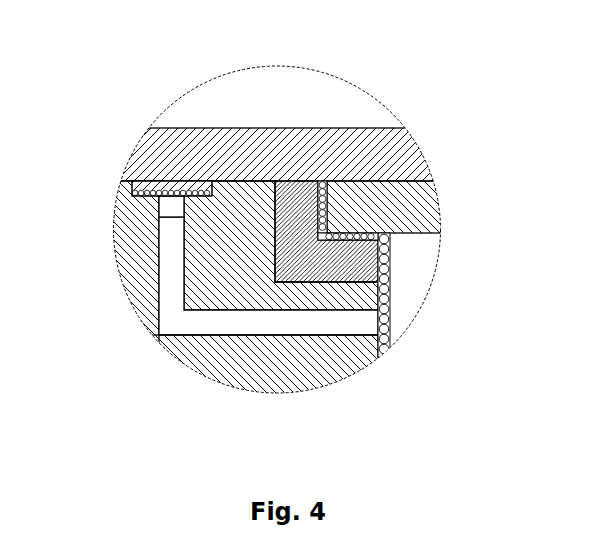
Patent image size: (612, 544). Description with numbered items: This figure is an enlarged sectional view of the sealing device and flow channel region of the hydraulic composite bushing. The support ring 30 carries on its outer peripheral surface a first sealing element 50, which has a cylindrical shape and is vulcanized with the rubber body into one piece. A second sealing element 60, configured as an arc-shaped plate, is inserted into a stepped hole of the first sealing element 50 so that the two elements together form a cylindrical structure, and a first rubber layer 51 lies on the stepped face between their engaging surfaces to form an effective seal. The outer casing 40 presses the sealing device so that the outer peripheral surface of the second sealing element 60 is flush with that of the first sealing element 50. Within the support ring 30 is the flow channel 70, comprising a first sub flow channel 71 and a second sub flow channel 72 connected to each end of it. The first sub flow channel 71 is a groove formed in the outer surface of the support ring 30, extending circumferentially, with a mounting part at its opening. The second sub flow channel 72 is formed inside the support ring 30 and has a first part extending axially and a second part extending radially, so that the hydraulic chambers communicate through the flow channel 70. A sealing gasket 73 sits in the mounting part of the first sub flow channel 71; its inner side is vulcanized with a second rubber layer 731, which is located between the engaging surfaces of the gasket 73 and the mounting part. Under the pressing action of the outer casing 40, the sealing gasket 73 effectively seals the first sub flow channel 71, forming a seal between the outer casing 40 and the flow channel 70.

The support ring 30 is at (242, 358).
The outer casing 40 is at (283, 137).
The first sealing element 50 is at (390, 280).
The first rubber layer 51 is at (330, 208).
The second sealing element 60 is at (408, 220).
The flow channel 70 is at (170, 249).
The first sub flow channel 71 is at (167, 210).
The second sub flow channel 72 is at (180, 320).
The sealing gasket 73 is at (163, 187).
The second rubber layer 731 is at (183, 194).